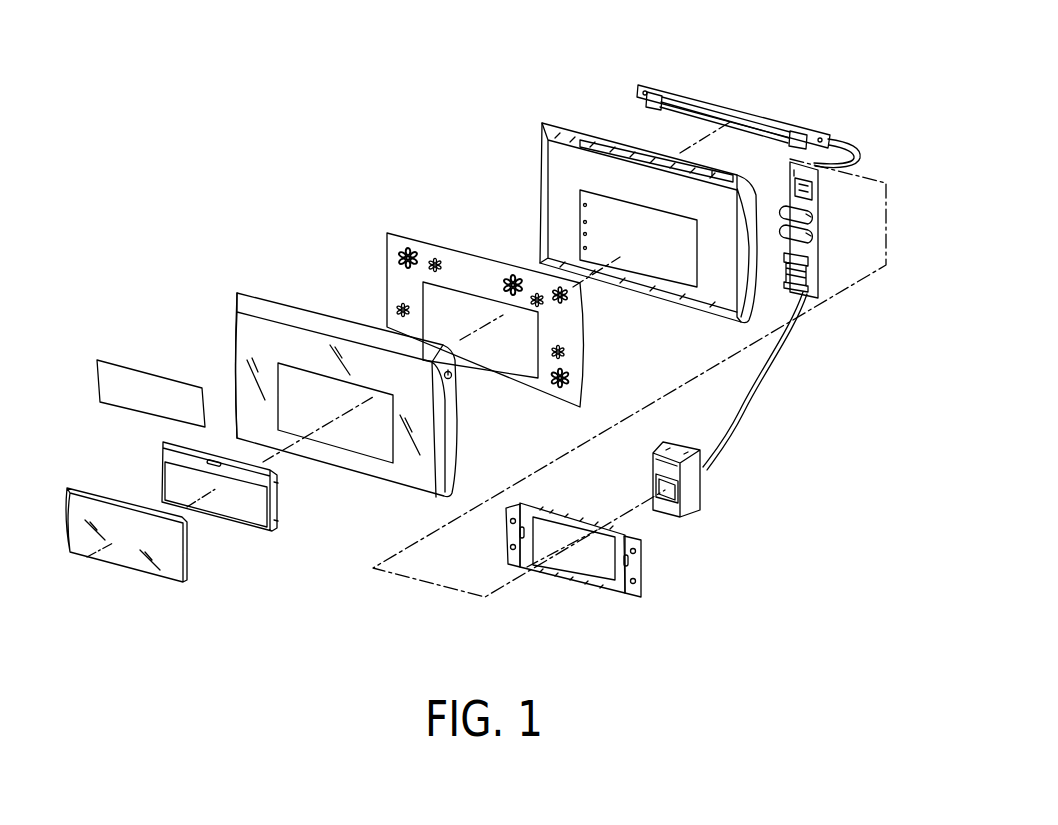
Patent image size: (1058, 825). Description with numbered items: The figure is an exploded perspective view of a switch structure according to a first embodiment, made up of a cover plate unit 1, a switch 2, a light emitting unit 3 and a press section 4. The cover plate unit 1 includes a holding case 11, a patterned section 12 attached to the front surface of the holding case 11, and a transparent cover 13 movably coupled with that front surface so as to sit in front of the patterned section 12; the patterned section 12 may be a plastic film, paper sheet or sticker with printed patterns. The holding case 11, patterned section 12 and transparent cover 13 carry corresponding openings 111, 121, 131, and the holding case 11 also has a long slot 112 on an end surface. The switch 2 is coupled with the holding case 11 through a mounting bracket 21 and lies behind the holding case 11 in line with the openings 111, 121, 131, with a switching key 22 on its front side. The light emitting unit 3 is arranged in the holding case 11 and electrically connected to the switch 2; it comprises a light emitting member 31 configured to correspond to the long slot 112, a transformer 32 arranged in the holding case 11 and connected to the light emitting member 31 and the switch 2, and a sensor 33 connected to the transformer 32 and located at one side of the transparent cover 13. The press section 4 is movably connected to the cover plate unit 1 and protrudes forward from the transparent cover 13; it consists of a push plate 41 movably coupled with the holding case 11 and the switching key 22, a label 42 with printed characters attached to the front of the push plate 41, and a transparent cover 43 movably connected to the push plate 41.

The cover plate unit 1 is at (452, 152).
The holding case 11 is at (550, 182).
The opening 111 is at (667, 268).
The long slot 112 is at (602, 145).
The patterned section 12 is at (402, 243).
The opening 121 is at (472, 300).
The transparent cover 13 is at (298, 308).
The opening 131 is at (360, 440).
The switch 2 is at (705, 480).
The mounting bracket 21 is at (587, 582).
The switching key 22 is at (667, 497).
The light emitting unit 3 is at (700, 97).
The light emitting member 31 is at (757, 127).
The transformer 32 is at (815, 228).
The sensor 33 is at (451, 379).
The press section 4 is at (233, 262).
The push plate 41 is at (223, 457).
The label 42 is at (142, 378).
The transparent cover 43 is at (82, 500).